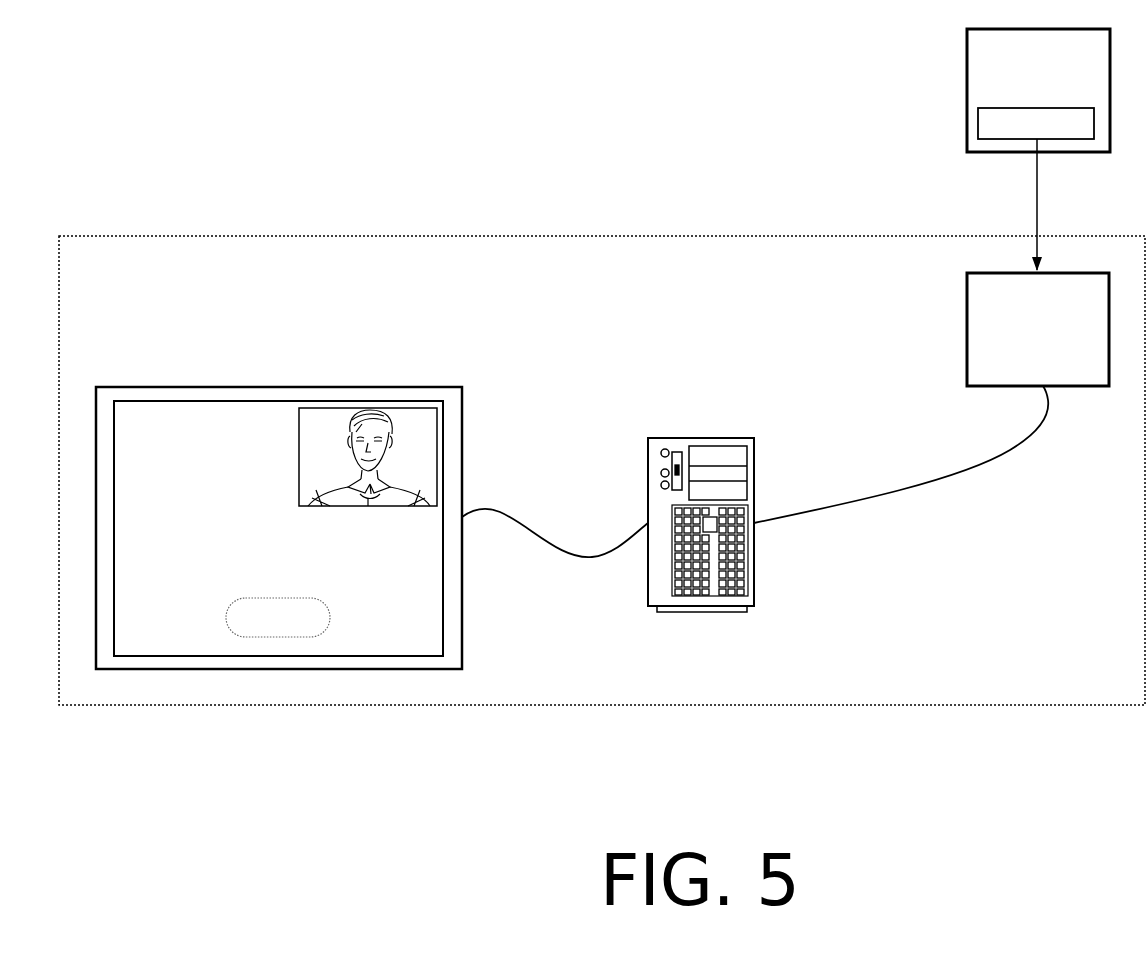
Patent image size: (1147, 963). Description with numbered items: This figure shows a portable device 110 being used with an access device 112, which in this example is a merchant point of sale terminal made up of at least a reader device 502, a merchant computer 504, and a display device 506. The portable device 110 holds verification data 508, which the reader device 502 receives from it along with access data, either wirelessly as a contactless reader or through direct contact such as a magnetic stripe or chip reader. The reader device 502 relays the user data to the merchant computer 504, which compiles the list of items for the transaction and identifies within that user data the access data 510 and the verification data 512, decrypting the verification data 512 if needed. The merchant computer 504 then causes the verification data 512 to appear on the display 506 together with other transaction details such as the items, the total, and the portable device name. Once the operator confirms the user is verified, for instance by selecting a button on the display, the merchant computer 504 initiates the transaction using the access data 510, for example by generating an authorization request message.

The portable device 110 is at (1038, 90).
The access device 112 is at (602, 470).
The reader device 502 is at (963, 338).
The merchant computer 504 is at (762, 450).
The display device 506 is at (309, 502).
The verification data 508 is at (977, 127).
The access data 510 is at (410, 563).
The verification data 512 is at (443, 466).